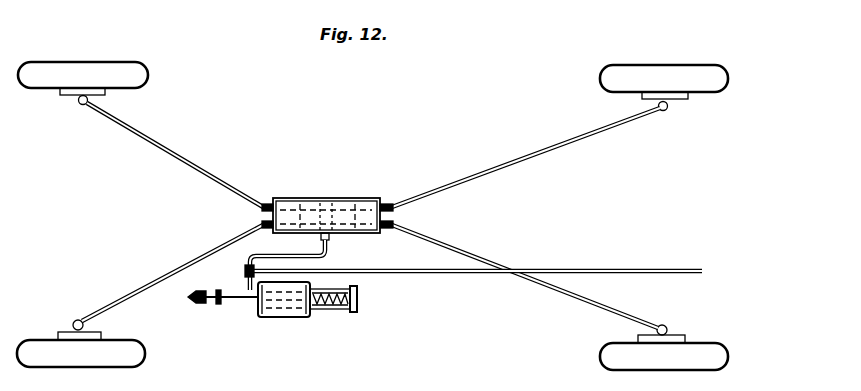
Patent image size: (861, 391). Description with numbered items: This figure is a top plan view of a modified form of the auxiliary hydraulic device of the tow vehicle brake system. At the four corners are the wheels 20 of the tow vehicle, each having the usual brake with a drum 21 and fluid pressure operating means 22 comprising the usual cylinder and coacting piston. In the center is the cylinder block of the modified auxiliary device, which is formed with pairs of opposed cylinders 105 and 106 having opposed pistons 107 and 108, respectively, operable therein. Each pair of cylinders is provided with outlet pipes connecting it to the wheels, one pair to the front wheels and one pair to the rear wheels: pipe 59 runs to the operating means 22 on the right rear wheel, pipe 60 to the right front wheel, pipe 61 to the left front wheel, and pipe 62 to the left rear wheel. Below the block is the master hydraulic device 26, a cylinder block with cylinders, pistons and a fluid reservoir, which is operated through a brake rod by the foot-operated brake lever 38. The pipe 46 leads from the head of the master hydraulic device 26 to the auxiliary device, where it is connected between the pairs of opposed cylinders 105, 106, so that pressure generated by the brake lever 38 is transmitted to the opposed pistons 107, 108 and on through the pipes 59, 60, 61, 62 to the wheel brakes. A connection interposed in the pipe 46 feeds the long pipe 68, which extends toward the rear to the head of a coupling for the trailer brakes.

The wheels 20 is at (73, 67).
The drums 21 is at (105, 92).
The fluid pressure operating means 22 is at (78, 103).
The master hydraulic device 26 is at (299, 324).
The brake lever 38 is at (219, 306).
The pipe 46 is at (331, 254).
The pipe 59 is at (525, 162).
The pipe 60 is at (181, 163).
The pipe 61 is at (163, 277).
The pipe 62 is at (586, 302).
The pipe 68 is at (437, 276).
The opposed cylinders 105 is at (293, 228).
The opposed cylinders 106 is at (367, 228).
The opposed pistons 107 is at (318, 230).
The opposed pistons 108 is at (347, 230).